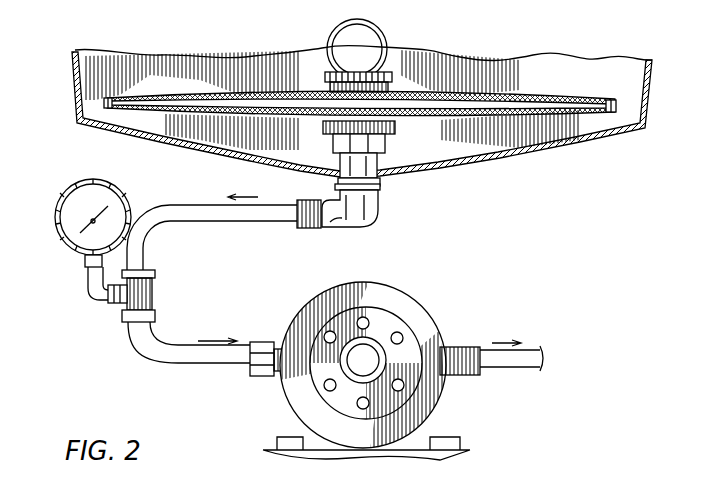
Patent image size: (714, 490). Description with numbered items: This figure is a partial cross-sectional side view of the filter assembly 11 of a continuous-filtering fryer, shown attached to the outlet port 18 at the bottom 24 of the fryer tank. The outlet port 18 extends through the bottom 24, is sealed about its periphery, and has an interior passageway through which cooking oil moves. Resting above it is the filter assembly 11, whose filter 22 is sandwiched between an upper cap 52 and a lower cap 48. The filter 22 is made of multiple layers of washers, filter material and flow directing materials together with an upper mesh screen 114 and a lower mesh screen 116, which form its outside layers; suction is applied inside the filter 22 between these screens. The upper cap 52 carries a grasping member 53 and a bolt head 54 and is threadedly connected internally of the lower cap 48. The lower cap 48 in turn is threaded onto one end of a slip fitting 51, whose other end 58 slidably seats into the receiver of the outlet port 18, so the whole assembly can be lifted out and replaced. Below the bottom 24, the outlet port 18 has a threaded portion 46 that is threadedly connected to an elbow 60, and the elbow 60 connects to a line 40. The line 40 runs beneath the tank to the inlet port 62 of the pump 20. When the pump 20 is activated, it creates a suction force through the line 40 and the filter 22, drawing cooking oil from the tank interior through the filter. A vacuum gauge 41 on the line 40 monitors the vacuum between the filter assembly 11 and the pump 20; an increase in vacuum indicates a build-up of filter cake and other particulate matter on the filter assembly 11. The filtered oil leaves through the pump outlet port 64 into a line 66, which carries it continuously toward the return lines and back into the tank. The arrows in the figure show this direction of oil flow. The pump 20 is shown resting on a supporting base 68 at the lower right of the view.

The filter assembly 11 is at (435, 50).
The bottom 24 is at (526, 157).
The upper mesh screen 114 is at (230, 86).
The lower mesh screen 116 is at (216, 125).
The grasping member 53 is at (386, 52).
The filter 22 is at (540, 74).
The other end of slip fitting 58 is at (586, 100).
The upper cap 52 is at (340, 74).
The bolt head 54 is at (392, 90).
The lower cap 48 is at (396, 128).
The slip fitting 51 is at (380, 152).
The outlet port 18 is at (381, 191).
The threaded portion 46 is at (381, 207).
The elbow 60 is at (326, 230).
The line 40 is at (221, 227).
The vacuum gauge 41 is at (132, 200).
The inlet port 62 is at (272, 385).
The pump 20 is at (298, 402).
The pump base 68 is at (456, 450).
The pump outlet port 64 is at (462, 377).
The line 66 is at (527, 370).